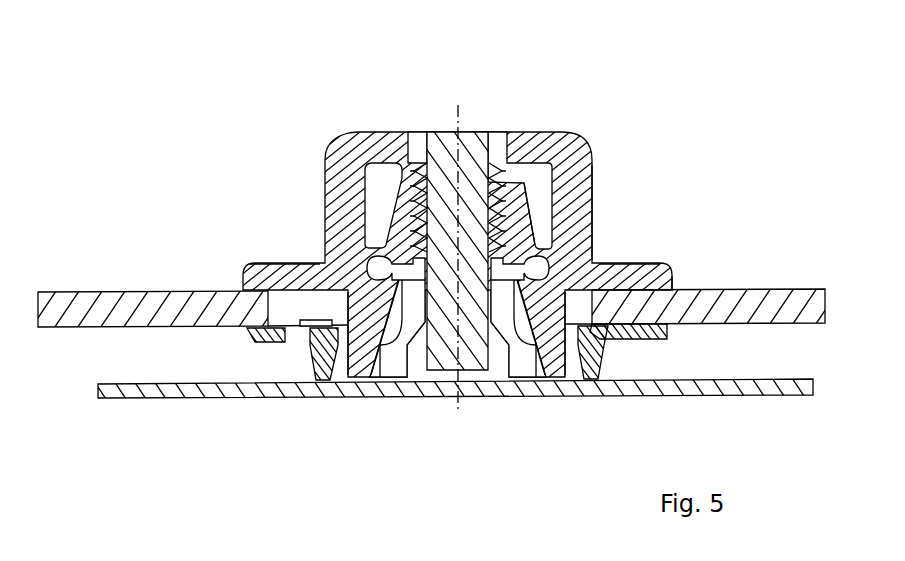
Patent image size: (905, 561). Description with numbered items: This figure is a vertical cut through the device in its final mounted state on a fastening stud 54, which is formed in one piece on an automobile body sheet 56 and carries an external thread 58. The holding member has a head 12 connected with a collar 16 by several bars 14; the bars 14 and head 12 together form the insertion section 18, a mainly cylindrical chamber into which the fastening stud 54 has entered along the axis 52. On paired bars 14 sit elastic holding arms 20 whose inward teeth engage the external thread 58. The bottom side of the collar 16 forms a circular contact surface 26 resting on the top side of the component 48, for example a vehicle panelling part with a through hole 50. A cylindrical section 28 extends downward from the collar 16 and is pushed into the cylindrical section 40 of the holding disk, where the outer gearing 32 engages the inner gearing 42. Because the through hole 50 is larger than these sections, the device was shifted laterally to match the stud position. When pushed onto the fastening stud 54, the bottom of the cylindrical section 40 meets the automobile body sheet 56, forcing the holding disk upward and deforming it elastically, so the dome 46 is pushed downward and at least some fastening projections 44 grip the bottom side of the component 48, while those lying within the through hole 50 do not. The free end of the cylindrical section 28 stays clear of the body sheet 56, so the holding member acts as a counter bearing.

The head 12 is at (537, 138).
The bars 14 is at (582, 197).
The collar 16 is at (638, 270).
The insertion section 18 is at (503, 168).
The holding arm 20 is at (562, 170).
The contact surface 26 is at (672, 288).
The cylindrical section 28 is at (368, 320).
The outer gearing 32 is at (338, 345).
The cylindrical section 40 is at (323, 350).
The inner gearing 42 is at (566, 340).
The fastening projections 44 is at (312, 327).
The dome 46 is at (250, 337).
The component 48 is at (722, 300).
The through hole 50 is at (280, 325).
The axis 52 is at (460, 117).
The fastening stud 54 is at (432, 133).
The automobile body sheet 56 is at (208, 398).
The external thread 58 is at (380, 148).